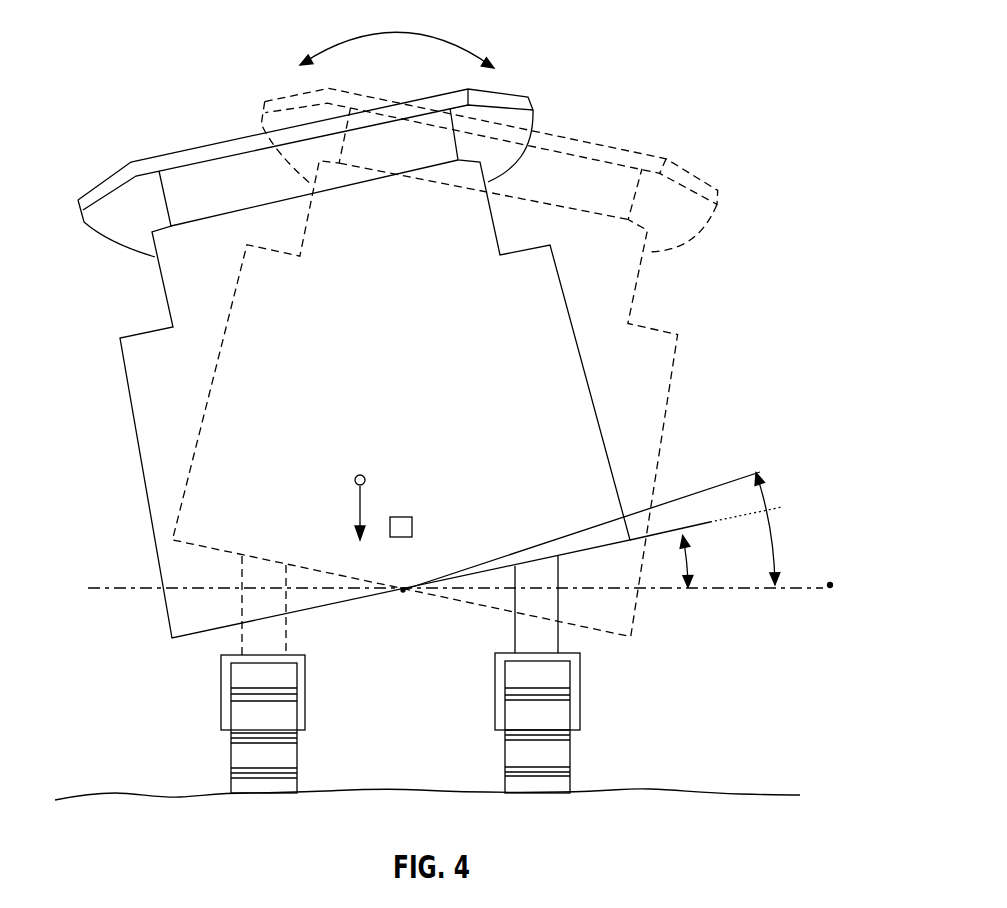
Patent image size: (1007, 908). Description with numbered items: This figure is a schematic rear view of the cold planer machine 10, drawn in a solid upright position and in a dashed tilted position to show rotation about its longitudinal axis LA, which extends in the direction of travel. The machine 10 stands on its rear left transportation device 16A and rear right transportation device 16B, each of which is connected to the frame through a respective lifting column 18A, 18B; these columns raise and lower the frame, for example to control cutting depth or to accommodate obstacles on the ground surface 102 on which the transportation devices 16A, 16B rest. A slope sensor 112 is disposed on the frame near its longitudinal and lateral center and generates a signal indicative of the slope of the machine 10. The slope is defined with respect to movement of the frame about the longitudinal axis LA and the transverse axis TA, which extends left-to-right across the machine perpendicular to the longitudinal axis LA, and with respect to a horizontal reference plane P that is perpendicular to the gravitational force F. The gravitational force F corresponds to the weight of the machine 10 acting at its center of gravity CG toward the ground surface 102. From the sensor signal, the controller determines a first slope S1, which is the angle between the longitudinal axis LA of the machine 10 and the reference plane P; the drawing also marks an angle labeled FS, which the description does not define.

The cold planer machine 10 is at (595, 84).
The slope sensor 112 is at (412, 528).
The rear left transportation device 16A is at (297, 758).
The rear right transportation device 16B is at (504, 756).
The lifting column 18A is at (287, 622).
The lifting column 18B is at (560, 632).
The ground surface 102 is at (738, 795).
The center of gravity CG is at (361, 460).
The gravitational force F is at (357, 511).
The longitudinal axis LA is at (405, 593).
The reference plane P is at (793, 590).
The transverse axis TA is at (800, 503).
The full swing angle FS is at (770, 548).
The first slope S1 is at (695, 560).